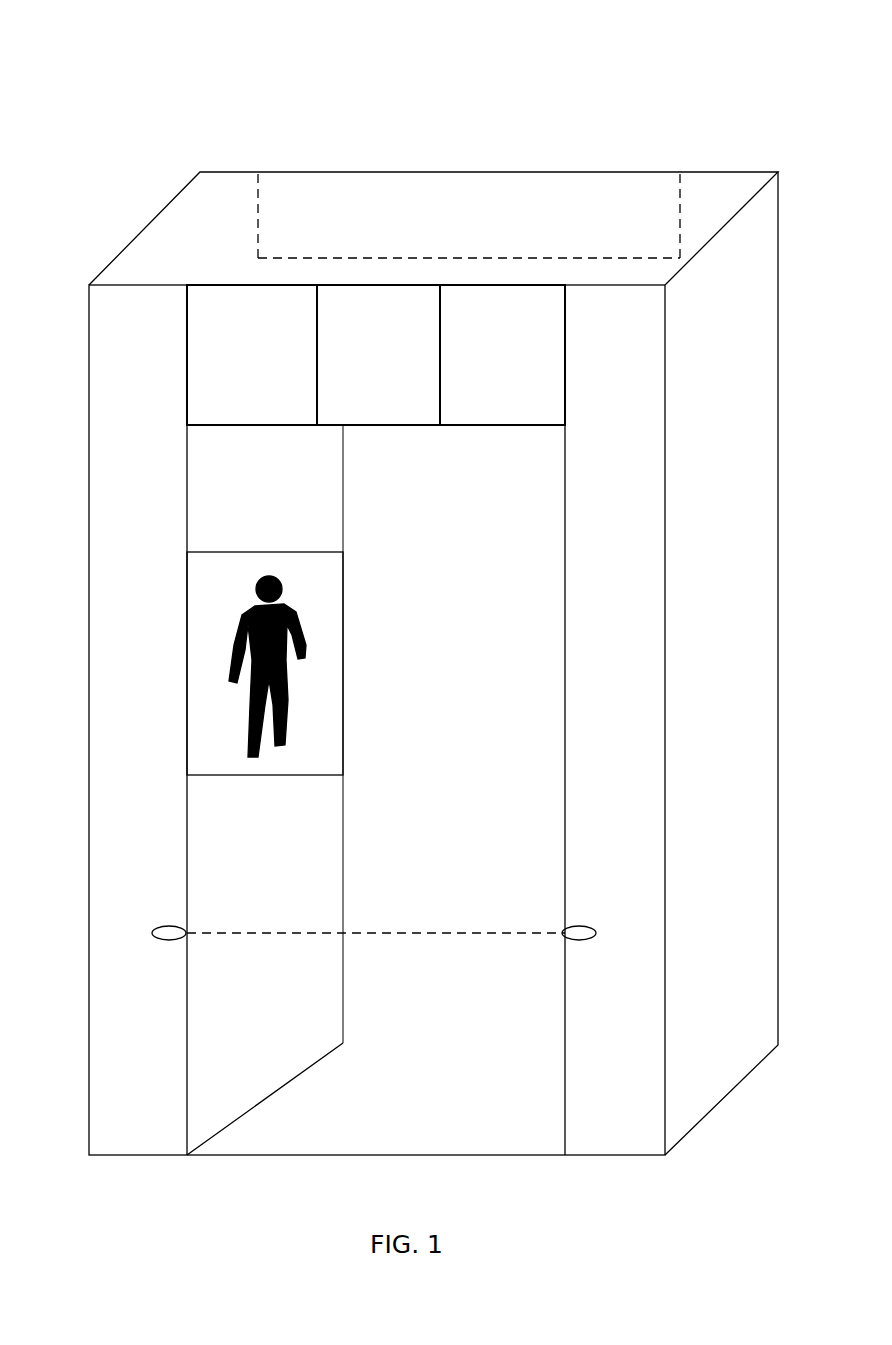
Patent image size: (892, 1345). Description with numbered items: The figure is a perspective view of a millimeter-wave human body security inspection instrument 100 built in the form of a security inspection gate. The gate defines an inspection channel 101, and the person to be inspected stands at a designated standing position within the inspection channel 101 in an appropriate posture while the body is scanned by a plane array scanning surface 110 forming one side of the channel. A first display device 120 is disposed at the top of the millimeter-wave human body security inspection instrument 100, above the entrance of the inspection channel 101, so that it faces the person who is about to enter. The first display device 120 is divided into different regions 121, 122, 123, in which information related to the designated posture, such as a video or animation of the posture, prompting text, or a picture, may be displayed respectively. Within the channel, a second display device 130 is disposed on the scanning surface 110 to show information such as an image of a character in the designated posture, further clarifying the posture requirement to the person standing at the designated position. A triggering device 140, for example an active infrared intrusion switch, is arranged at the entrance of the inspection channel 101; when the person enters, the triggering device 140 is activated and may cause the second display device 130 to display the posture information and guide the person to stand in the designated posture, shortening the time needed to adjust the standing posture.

The millimeter-wave human body security inspection instrument 100 is at (156, 85).
The inspection channel 101 is at (370, 1079).
The plane array scanning surface 110 is at (564, 790).
The first display device 120 is at (573, 98).
The region of the first display device 121 is at (253, 318).
The region of the first display device 122 is at (388, 323).
The region of the first display device 123 is at (507, 323).
The second display device 130 is at (320, 623).
The triggering device 140 is at (568, 942).